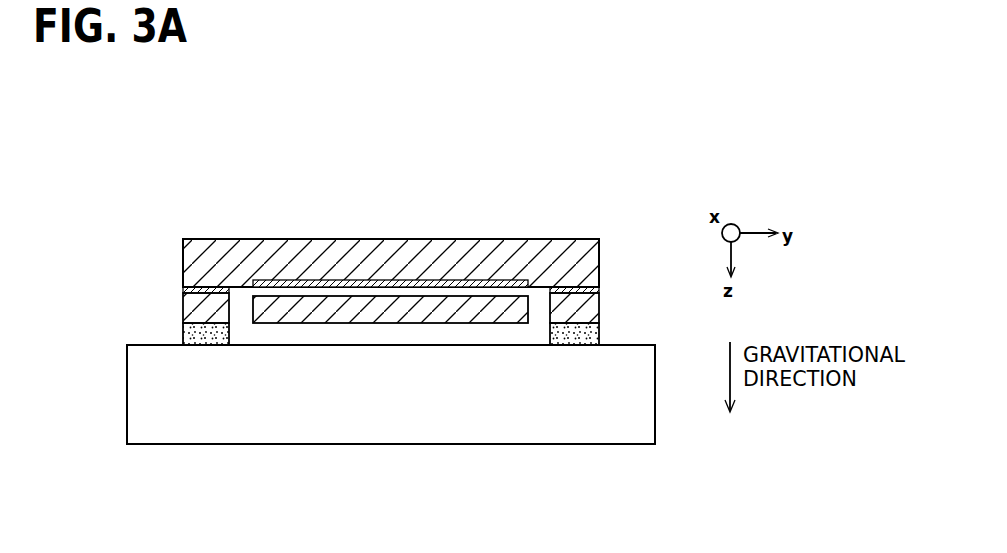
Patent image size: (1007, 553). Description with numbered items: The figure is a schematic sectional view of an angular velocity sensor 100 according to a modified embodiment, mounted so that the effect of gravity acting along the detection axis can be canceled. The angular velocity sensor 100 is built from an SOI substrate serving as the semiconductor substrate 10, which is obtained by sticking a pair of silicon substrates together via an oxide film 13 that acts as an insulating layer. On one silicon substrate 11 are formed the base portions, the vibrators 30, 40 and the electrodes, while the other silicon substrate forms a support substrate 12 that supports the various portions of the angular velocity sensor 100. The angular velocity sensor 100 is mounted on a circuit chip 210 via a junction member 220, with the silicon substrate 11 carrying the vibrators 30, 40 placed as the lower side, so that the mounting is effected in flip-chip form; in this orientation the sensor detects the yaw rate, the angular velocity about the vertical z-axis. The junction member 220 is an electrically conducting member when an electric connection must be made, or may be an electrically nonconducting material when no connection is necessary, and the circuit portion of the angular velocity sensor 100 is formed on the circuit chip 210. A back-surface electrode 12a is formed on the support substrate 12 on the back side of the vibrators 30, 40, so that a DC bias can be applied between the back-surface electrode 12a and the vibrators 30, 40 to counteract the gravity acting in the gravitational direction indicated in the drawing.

The semiconductor substrate 10 is at (213, 236).
The angular velocity sensor 100 is at (555, 226).
The silicon substrate 11 is at (182, 312).
The support substrate 12 is at (354, 237).
The back-surface electrode 12a is at (445, 283).
The oxide film 13 is at (182, 290).
The vibrator 30 is at (390, 255).
The vibrator 40 is at (324, 305).
The circuit chip 210 is at (192, 418).
The junction member 220 is at (182, 339).